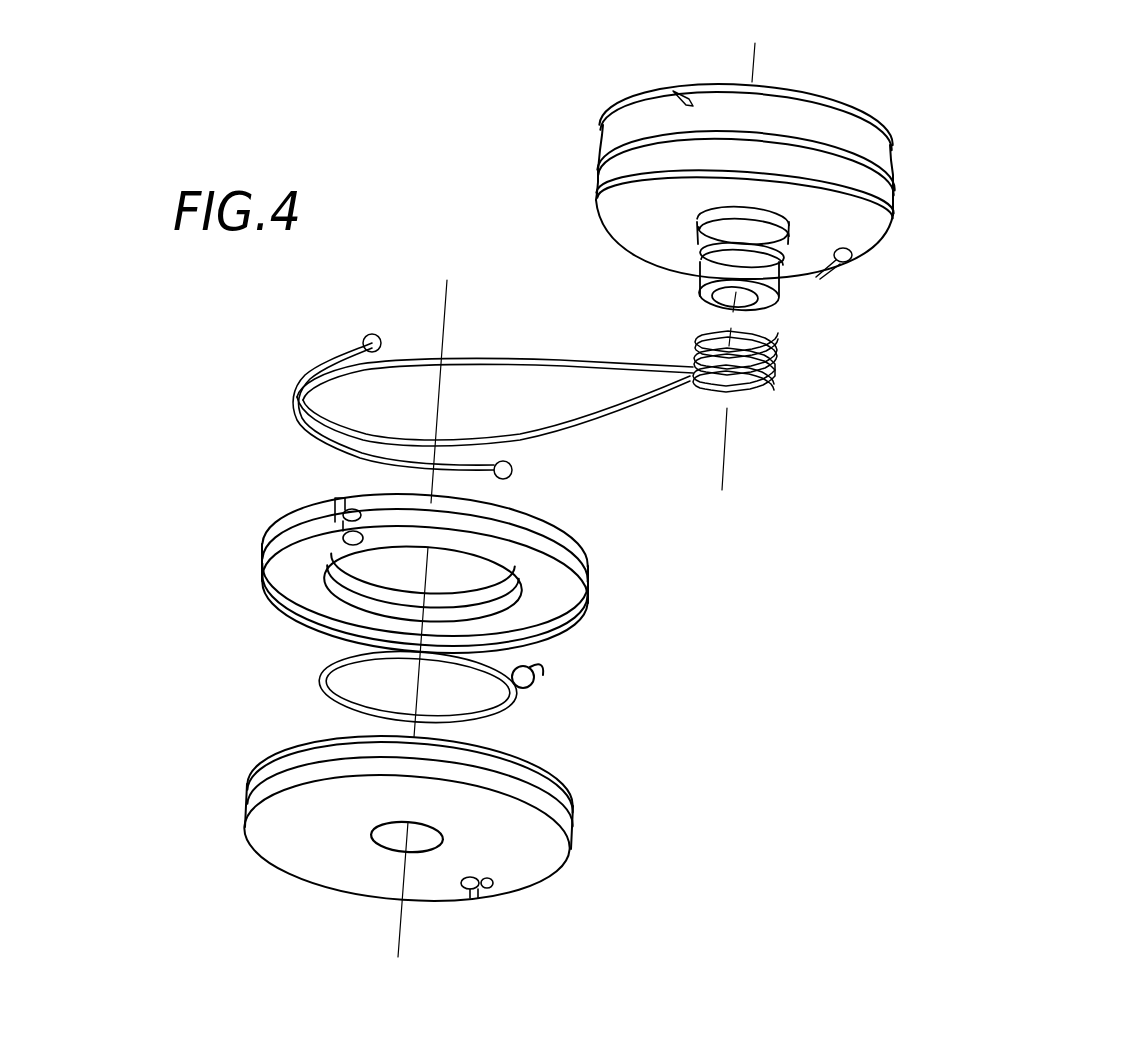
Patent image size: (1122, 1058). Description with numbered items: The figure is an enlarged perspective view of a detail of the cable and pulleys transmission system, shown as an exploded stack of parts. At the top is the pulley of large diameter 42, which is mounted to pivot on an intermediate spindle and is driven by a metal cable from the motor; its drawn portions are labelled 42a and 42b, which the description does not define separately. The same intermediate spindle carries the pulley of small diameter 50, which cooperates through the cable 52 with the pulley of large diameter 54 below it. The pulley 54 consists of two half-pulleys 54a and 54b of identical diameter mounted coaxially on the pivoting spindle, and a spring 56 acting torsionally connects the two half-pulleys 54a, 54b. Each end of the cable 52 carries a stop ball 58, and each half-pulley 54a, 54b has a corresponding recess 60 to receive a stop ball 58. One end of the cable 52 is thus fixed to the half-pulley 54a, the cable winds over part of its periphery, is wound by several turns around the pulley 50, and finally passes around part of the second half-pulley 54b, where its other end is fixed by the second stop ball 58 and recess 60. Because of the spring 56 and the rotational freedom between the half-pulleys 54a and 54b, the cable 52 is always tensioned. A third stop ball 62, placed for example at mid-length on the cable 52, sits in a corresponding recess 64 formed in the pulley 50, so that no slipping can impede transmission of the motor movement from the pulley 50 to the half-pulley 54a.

The pulley of large diameter 42 is at (821, 177).
The upper cap ring portion 42a is at (877, 147).
The lower cap plate 42b is at (880, 200).
The recess 64 is at (700, 240).
The pulley of small diameter 50 is at (779, 283).
The third stop ball 62 is at (690, 360).
The cable 52 is at (493, 389).
The stop ball 58 is at (362, 338).
The pulley of large diameter 54 is at (483, 716).
The half-pulley 54b is at (584, 560).
The spring 56 is at (327, 667).
The half-pulley 54a is at (570, 823).
The recess 60 is at (335, 503).